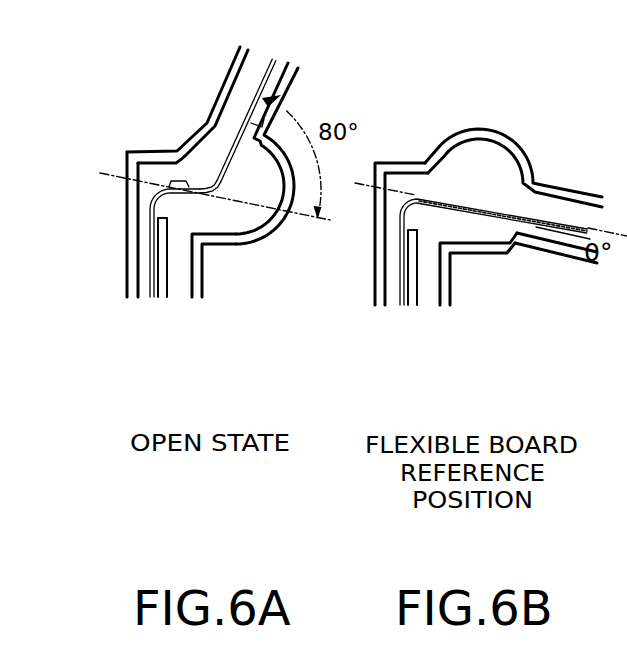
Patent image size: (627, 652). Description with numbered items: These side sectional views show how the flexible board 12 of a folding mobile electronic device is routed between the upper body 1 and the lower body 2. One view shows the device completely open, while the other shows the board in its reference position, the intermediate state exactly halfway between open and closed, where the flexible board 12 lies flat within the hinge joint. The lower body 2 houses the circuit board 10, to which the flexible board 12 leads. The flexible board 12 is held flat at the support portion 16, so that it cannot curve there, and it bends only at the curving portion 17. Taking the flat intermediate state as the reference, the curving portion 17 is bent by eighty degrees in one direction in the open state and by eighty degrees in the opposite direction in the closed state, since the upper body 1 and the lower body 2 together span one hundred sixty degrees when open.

In FIG. 6A, the upper body 1 is at (232, 80).
In FIG. 6B, the upper body 1 is at (573, 190).
In FIG. 6A, the lower body 2 is at (126, 265).
In FIG. 6B, the lower body 2 is at (375, 277).
In FIG. 6A, the circuit board 10 is at (170, 283).
In FIG. 6B, the circuit board 10 is at (418, 290).
In FIG. 6A, the flexible board 12 is at (152, 207).
In FIG. 6B, the flexible board 12 is at (457, 197).
In FIG. 6A, the support portion 16 is at (193, 185).
In FIG. 6A, the curving portion 17 is at (211, 197).